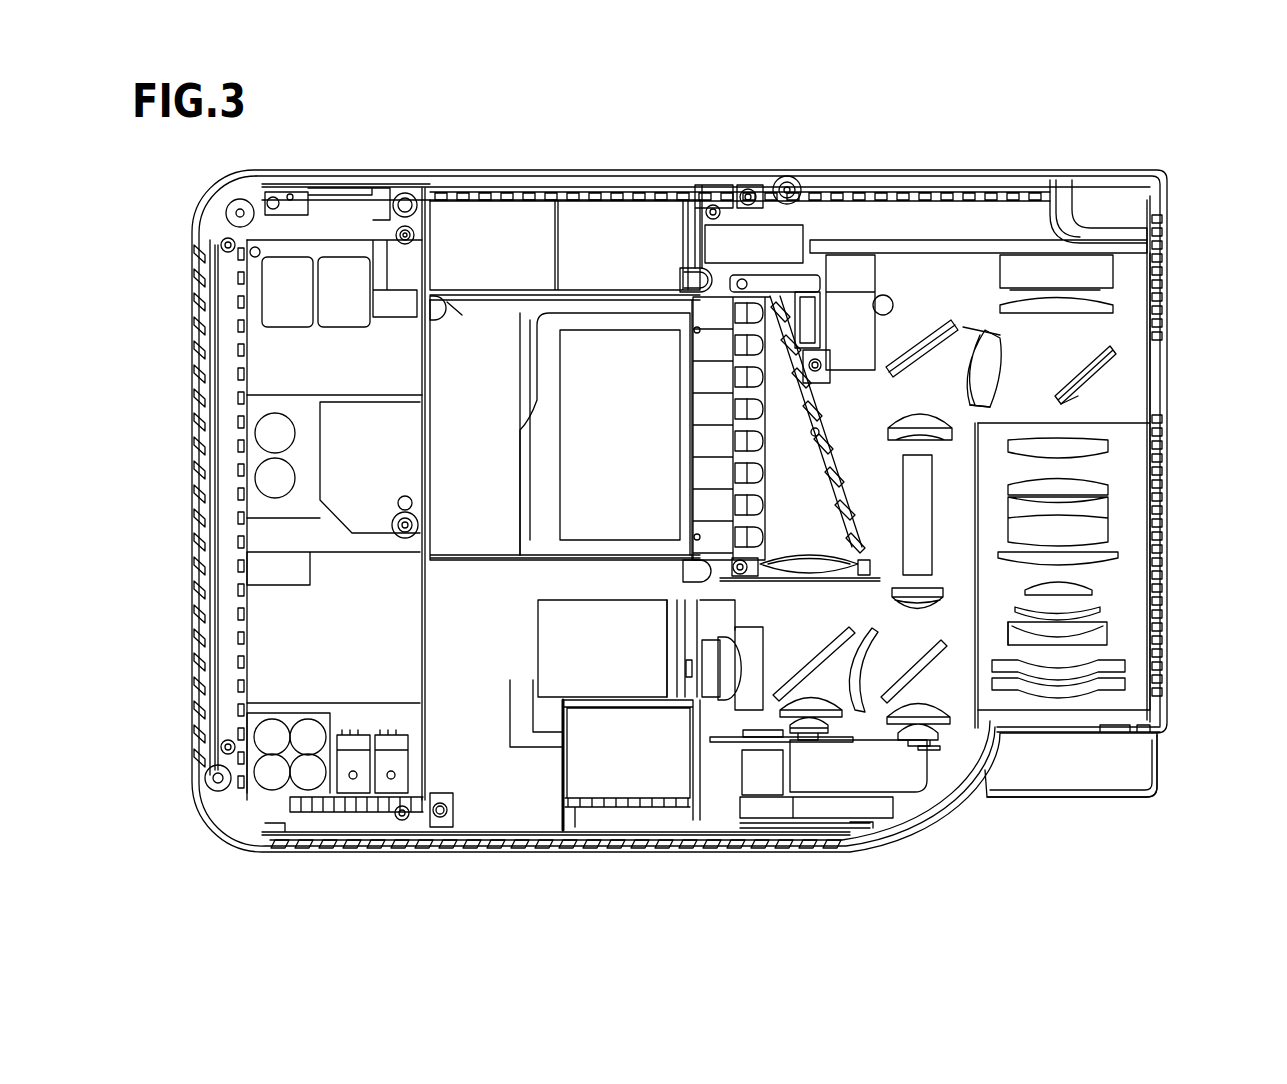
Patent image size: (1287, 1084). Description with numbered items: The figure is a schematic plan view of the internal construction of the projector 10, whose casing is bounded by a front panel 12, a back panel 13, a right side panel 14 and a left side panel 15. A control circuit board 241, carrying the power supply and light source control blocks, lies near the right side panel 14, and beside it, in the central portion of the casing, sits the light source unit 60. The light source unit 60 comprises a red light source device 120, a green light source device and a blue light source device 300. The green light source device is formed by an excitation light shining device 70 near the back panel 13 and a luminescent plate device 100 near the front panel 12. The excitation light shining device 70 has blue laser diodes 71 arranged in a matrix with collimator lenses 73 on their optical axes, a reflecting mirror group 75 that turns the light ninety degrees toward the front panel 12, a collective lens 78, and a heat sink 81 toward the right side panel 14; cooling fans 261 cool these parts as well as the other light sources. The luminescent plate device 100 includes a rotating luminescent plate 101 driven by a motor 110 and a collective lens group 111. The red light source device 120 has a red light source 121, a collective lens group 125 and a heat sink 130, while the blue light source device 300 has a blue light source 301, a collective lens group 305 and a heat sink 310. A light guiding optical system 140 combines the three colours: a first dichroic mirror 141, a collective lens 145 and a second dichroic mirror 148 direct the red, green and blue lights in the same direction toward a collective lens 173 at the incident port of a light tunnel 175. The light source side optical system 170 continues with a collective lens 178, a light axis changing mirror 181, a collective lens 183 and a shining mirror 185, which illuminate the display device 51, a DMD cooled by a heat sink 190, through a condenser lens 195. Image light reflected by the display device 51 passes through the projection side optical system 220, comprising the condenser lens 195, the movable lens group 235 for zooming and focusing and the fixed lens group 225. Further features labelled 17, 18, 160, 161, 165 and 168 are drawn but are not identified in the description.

The projector 10 is at (1181, 158).
The front panel 12 is at (340, 840).
The back panel 13 is at (514, 172).
The right side panel 14 is at (192, 390).
The left side panel 15 is at (1168, 665).
The vent openings 17 is at (203, 420).
The inner wall of housing 18 is at (481, 186).
The display device 51 is at (1095, 303).
The light source unit 60 is at (683, 482).
The excitation light shining device 70 is at (722, 300).
The blue laser diodes 71 is at (738, 412).
The collimator lenses 73 is at (758, 378).
The reflecting mirror group 75 is at (800, 443).
The collective lens 78 is at (800, 568).
The heat sink 81 is at (578, 392).
The luminescent plate device 100 is at (775, 808).
The luminescent plate 101 is at (730, 742).
The motor 110 is at (752, 795).
The collective lens group 111 is at (840, 722).
The red light source device 120 is at (678, 697).
The red light source 121 is at (688, 668).
The collective lens group 125 is at (700, 640).
The heat sink 130 is at (575, 650).
The light guiding optical system 140 is at (1037, 707).
The first dichroic mirror 141 is at (805, 667).
The collective lens 145 is at (921, 750).
The second dichroic mirror 148 is at (915, 665).
The projection lens unit 160 is at (1092, 695).
The light guide element 161 is at (948, 391).
The lens 165 is at (993, 345).
The lens 168 is at (1112, 497).
The light source side optical system 170 is at (935, 320).
The collective lens 173 is at (922, 601).
The light tunnel 175 is at (920, 557).
The collective lens 178 is at (927, 420).
The light axis changing mirror 181 is at (920, 343).
The collective lens 183 is at (1085, 378).
The shining mirror 185 is at (1078, 396).
The heat sink 190 is at (1022, 213).
The condenser lens 195 is at (1103, 332).
The projection side optical system 220 is at (1112, 525).
The fixed lens group 225 is at (1100, 727).
The movable lens group 235 is at (1112, 472).
The control circuit board 241 is at (307, 608).
The cooling fan 261 is at (452, 240).
The blue light source device 300 is at (932, 758).
The blue light source 301 is at (963, 717).
The collective lens group 305 is at (938, 696).
The heat sink 310 is at (825, 770).